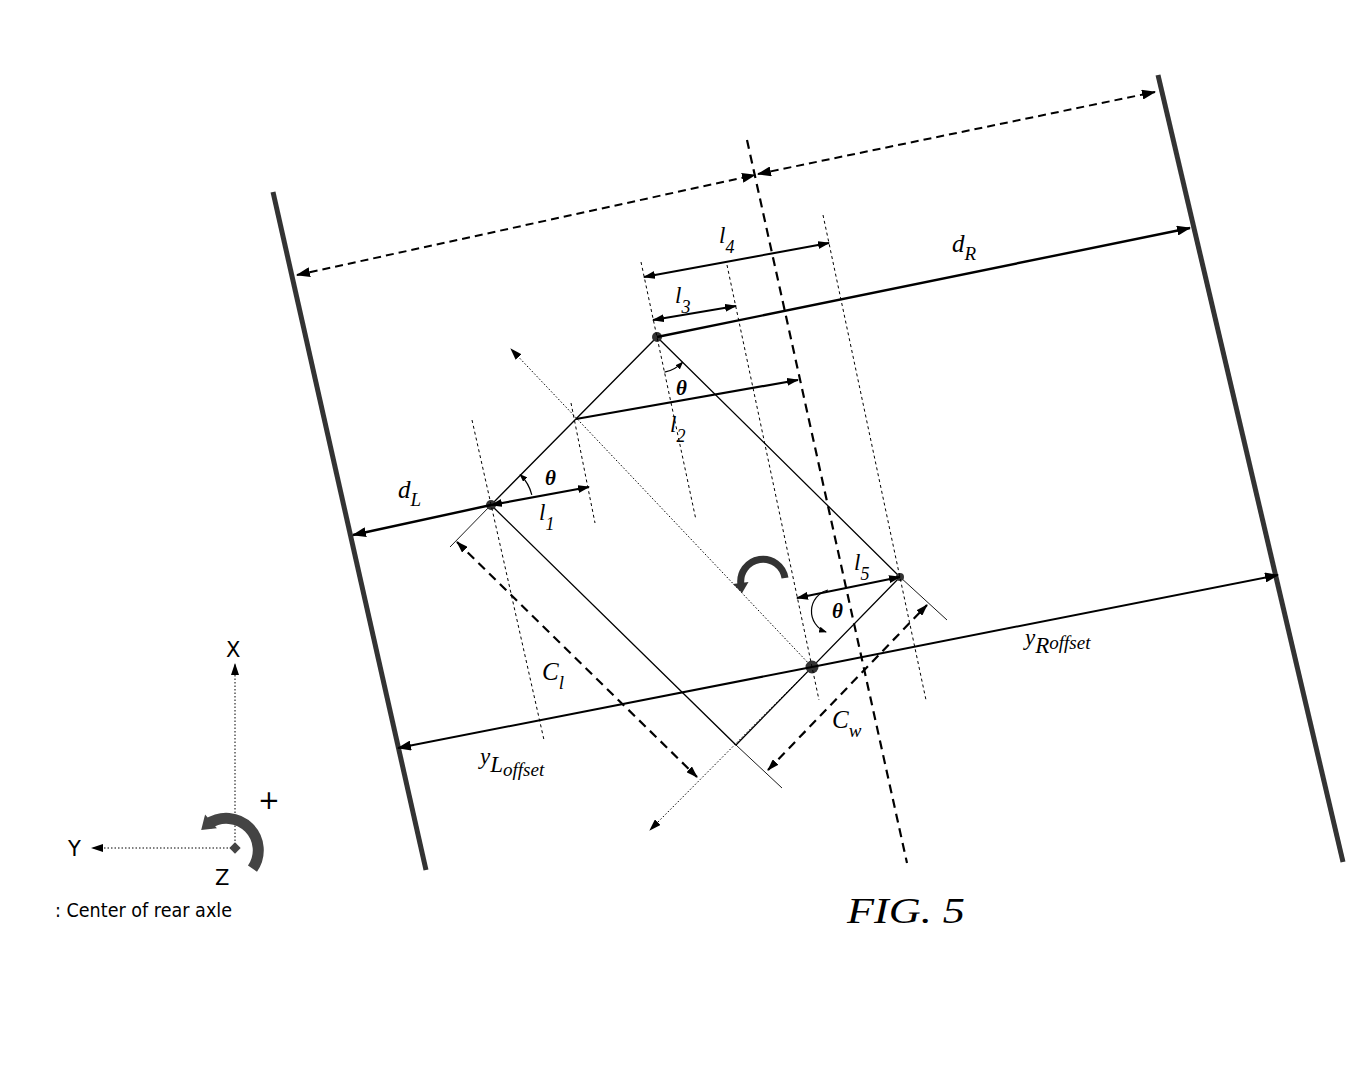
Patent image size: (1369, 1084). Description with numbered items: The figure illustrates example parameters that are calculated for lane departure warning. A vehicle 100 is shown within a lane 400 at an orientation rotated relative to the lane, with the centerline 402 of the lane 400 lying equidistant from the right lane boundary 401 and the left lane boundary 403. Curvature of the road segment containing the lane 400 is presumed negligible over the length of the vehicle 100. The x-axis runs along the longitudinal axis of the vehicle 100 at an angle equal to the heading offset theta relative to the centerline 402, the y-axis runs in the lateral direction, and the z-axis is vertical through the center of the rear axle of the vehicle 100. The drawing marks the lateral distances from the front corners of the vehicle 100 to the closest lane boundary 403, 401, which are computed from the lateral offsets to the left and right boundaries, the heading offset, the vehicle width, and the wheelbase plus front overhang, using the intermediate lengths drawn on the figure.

The vehicle 100 is at (868, 533).
The lane 400 is at (1139, 743).
The right lane boundary 401 is at (1272, 530).
The centerline 402 is at (887, 777).
The left lane boundary 403 is at (313, 363).